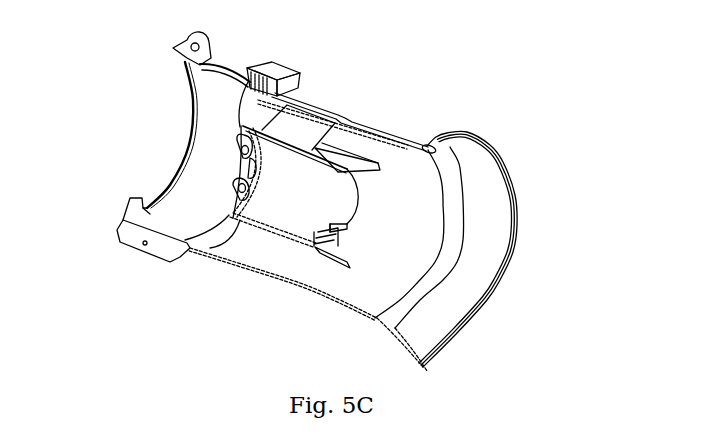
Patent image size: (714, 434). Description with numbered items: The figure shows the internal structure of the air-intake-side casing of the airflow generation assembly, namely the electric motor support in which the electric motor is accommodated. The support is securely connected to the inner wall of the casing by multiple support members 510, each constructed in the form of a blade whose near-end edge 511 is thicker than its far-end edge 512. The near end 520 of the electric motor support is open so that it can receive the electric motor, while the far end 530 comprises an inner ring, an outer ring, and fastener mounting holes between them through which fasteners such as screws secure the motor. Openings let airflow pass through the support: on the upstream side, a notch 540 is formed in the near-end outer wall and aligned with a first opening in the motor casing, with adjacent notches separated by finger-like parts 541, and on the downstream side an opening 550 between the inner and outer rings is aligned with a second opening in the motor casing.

The support member 510 is at (303, 128).
The near-end edge 511 is at (356, 130).
The far-end edge 512 is at (256, 62).
The near end 520 is at (365, 200).
The far end 530 is at (240, 130).
The notch 540 is at (343, 233).
The finger-like part 541 is at (351, 234).
The downstream-side opening 550 is at (243, 170).